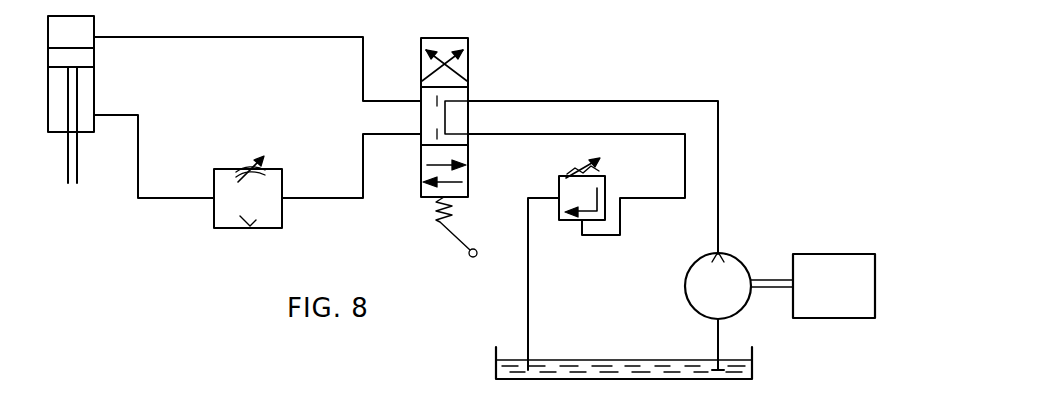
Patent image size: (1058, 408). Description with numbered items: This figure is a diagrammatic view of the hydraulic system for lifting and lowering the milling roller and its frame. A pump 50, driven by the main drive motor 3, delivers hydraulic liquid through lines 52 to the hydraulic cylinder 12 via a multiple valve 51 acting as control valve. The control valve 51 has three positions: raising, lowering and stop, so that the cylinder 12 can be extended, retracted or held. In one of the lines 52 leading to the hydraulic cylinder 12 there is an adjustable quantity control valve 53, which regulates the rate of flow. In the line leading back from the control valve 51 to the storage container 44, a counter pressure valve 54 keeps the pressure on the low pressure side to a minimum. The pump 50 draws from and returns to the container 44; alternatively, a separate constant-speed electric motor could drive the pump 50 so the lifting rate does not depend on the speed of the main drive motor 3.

The main drive motor 3 is at (831, 270).
The hydraulic cylinder 12 is at (85, 118).
The storage container 44 is at (512, 362).
The pump 50 is at (731, 266).
The multiple valve 51 is at (460, 63).
The lines 52 is at (312, 40).
The adjustable quantity control valve 53 is at (243, 167).
The counter pressure valve 54 is at (570, 190).